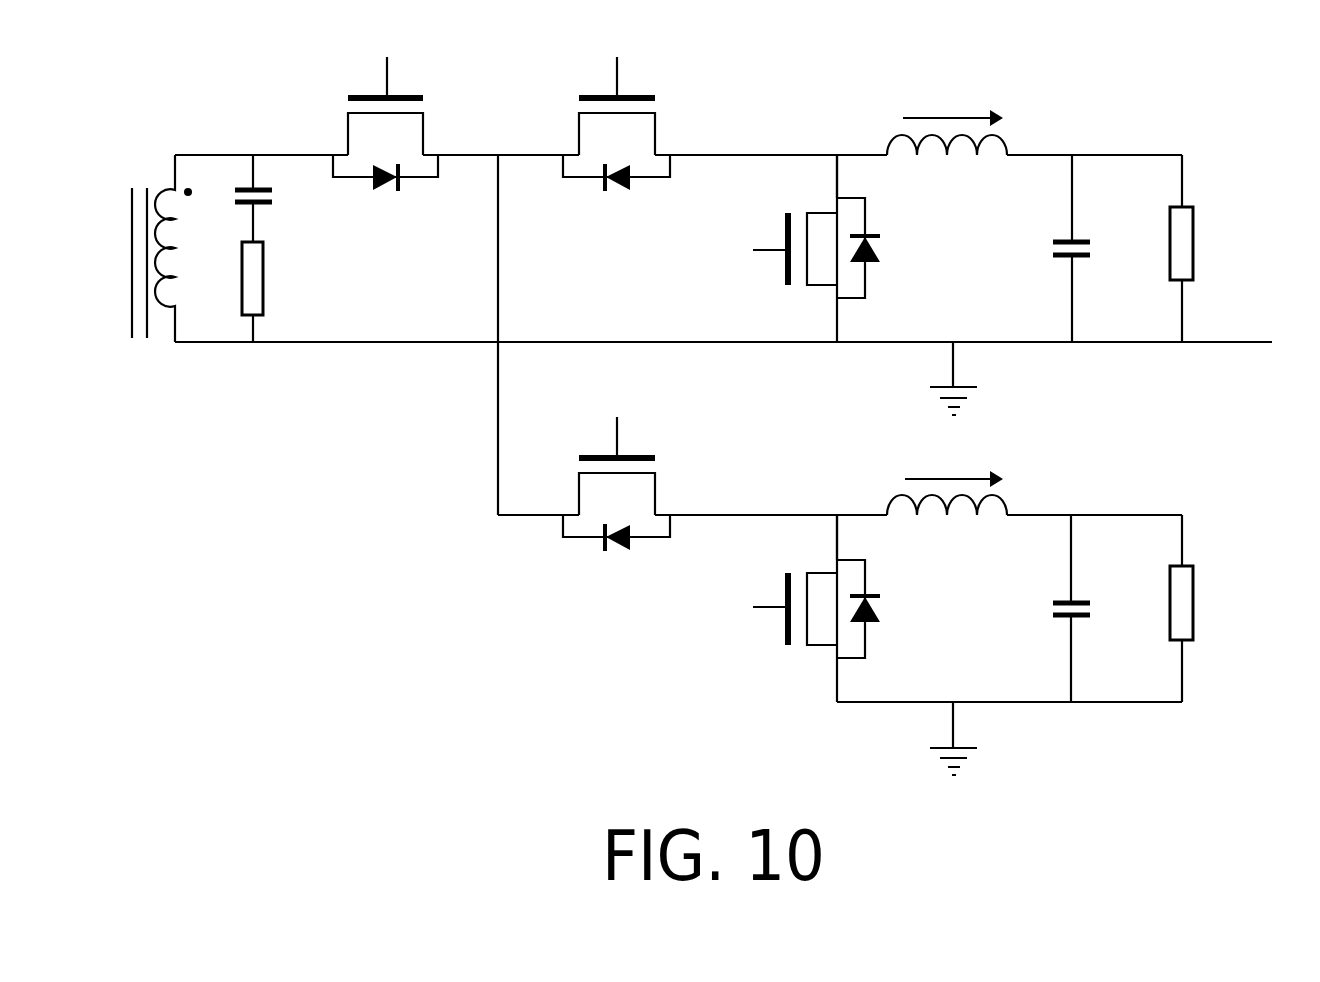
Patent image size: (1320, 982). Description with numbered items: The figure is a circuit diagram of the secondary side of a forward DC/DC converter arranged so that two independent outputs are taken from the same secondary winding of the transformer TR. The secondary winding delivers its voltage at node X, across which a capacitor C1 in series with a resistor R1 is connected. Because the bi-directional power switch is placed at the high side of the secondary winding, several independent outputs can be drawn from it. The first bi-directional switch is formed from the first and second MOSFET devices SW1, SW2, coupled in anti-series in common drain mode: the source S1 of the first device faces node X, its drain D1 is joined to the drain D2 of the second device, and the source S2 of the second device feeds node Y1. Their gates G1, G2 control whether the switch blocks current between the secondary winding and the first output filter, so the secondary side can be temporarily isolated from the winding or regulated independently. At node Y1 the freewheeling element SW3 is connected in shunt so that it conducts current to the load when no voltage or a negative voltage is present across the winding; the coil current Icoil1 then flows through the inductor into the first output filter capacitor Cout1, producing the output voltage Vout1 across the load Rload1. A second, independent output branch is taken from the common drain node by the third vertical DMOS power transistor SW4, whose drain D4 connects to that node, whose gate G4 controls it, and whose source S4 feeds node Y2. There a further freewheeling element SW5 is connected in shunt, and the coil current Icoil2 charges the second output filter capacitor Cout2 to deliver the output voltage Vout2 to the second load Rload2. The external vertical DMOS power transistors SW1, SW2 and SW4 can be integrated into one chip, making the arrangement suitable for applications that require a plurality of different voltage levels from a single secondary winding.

The transformer TR is at (156, 267).
The node X is at (214, 137).
The capacitor C1 is at (275, 198).
The resistor R1 is at (278, 292).
The gate of switch SW1 G1 is at (395, 75).
The source of switch SW1 S1 is at (322, 138).
The drain of switch SW1 D1 is at (450, 138).
The first MOSFET device SW1 is at (385, 173).
The gate of switch SW2 G2 is at (625, 75).
The drain of switch SW2 D2 is at (553, 138).
The source of switch SW2 S2 is at (679, 138).
The second MOSFET device SW2 is at (616, 173).
The node Y1 is at (816, 159).
The freewheeling diode SW3 is at (853, 248).
The coil current Icoil1 / inductor Icoil1 is at (947, 118).
The output capacitor Cout1 is at (1104, 248).
The output voltage Vout1 is at (1162, 140).
The load resistor Rload1 is at (1233, 248).
The gate of switch SW4 G4 is at (625, 434).
The drain of switch SW4 D4 is at (553, 498).
The source of switch SW4 S4 is at (679, 498).
The external vertical DMOS power transistor SW4 is at (616, 533).
The node Y2 is at (816, 520).
The switch SW5 is at (853, 608).
The coil current Icoil2 / inductor Icoil2 is at (947, 478).
The output capacitor Cout2 is at (1104, 608).
The output voltage Vout2 is at (1162, 498).
The load resistor Rload2 is at (1233, 608).